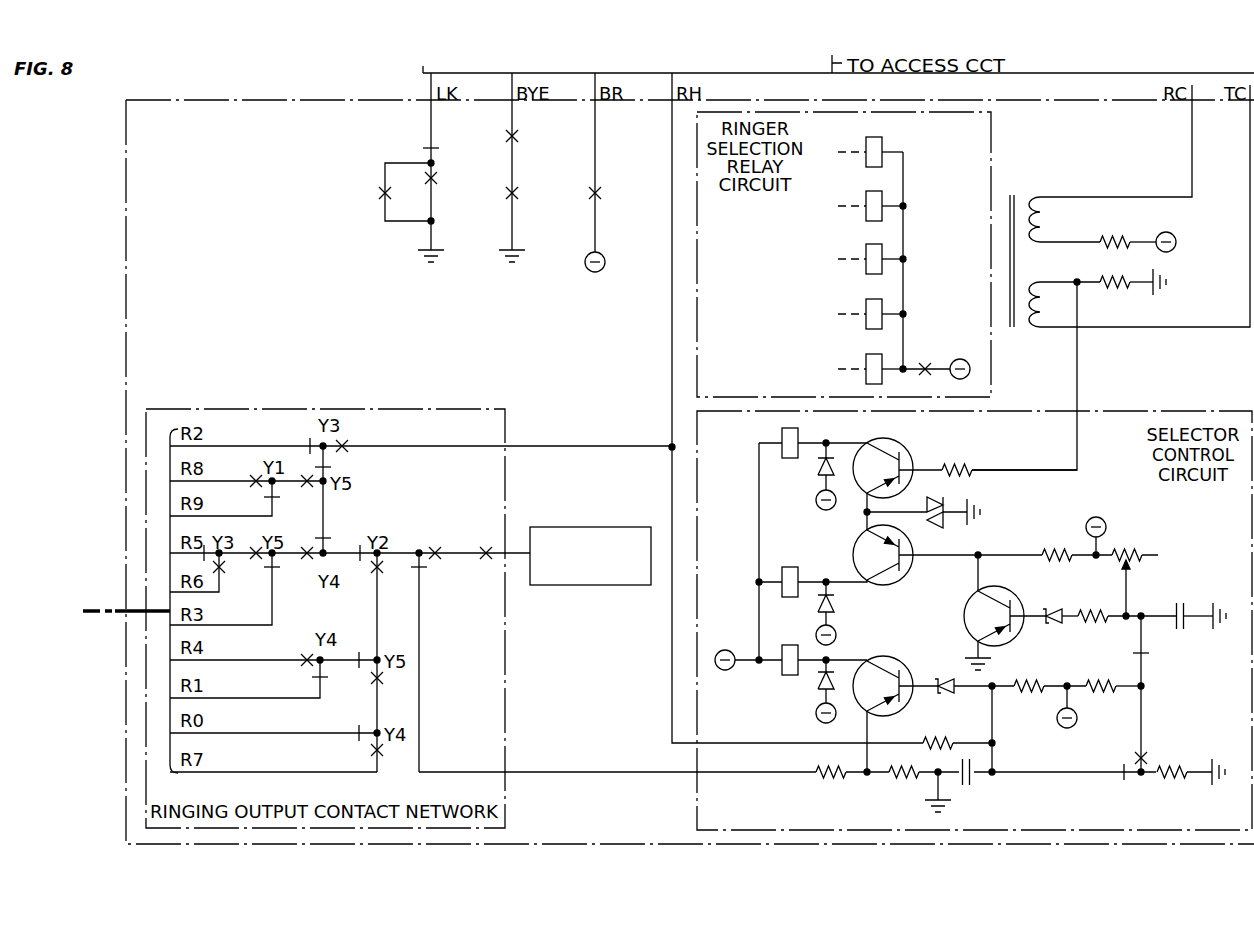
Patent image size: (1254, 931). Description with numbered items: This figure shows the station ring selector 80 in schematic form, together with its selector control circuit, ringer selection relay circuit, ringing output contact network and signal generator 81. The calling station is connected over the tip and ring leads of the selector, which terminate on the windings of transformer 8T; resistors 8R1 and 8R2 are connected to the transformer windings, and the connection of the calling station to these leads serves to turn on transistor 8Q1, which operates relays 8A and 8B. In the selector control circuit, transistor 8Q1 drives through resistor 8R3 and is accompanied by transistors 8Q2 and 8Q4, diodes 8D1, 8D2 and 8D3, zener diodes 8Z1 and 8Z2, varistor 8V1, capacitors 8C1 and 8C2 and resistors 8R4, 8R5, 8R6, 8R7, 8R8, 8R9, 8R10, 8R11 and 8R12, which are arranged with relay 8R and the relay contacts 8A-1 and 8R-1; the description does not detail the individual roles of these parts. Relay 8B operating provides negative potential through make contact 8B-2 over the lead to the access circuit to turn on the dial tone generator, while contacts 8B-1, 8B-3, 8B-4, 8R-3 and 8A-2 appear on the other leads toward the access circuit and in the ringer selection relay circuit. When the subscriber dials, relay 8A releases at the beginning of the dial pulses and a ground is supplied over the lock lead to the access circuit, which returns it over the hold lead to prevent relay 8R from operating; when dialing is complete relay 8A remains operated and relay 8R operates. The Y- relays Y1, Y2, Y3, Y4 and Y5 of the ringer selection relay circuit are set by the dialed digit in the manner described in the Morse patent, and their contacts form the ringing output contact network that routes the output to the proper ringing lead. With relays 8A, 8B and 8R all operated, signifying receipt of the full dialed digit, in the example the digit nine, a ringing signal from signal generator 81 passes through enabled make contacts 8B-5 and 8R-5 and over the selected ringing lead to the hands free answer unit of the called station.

The station ring selector 80 is at (206, 101).
The signal generator 81 is at (610, 527).
The transformer 8T is at (1130, 206).
The resistor 8R1 is at (1136, 232).
The resistor 8R2 is at (1120, 295).
The resistor 8R3 is at (951, 469).
The resistor 8R4 is at (1045, 539).
The resistor 8R5 is at (1124, 602).
The potentiometer 8R6 is at (1135, 572).
The resistor 8R7 is at (1039, 694).
The resistor 8R8 is at (1110, 676).
The resistor 8R9 is at (954, 733).
The resistor 8R10 is at (838, 786).
The resistor 8R11 is at (917, 789).
The resistor 8R12 is at (1190, 763).
The transistor 8Q1 is at (903, 441).
The transistor 8Q2 is at (855, 547).
The transistor 8Q4 is at (964, 612).
The diode 8D1 is at (813, 484).
The diode 8D2 is at (845, 613).
The diode 8D3 is at (815, 684).
The zener diode 8Z1 is at (956, 676).
The zener diode 8Z2 is at (1056, 602).
The varistor 8V1 is at (922, 526).
The capacitor 8C1 is at (1192, 604).
The capacitor 8C2 is at (969, 788).
The relay 8A is at (813, 457).
The relay 8B is at (792, 575).
The relay 8R is at (791, 651).
The relay 8A contact 8A-1 is at (1140, 782).
The relay 8A contact 8A-2 is at (451, 166).
The relay 8B contact 8B-1 is at (936, 359).
The make contact 8B-2 is at (617, 193).
The relay 8B contact 8B-3 is at (534, 193).
The relay 8B contact 8B-4 is at (383, 193).
The make contact 8B-5 is at (479, 545).
The relay 8R contact 8R-1 is at (1162, 694).
The relay 8R contact 8R-3 is at (533, 136).
The make contact 8R-5 is at (426, 545).
The Y- relay Y1 is at (870, 142).
The Y- relay Y2 is at (872, 196).
The Y- relay Y3 is at (872, 249).
The Y- relay Y4 is at (872, 304).
The Y- relay Y5 is at (872, 359).